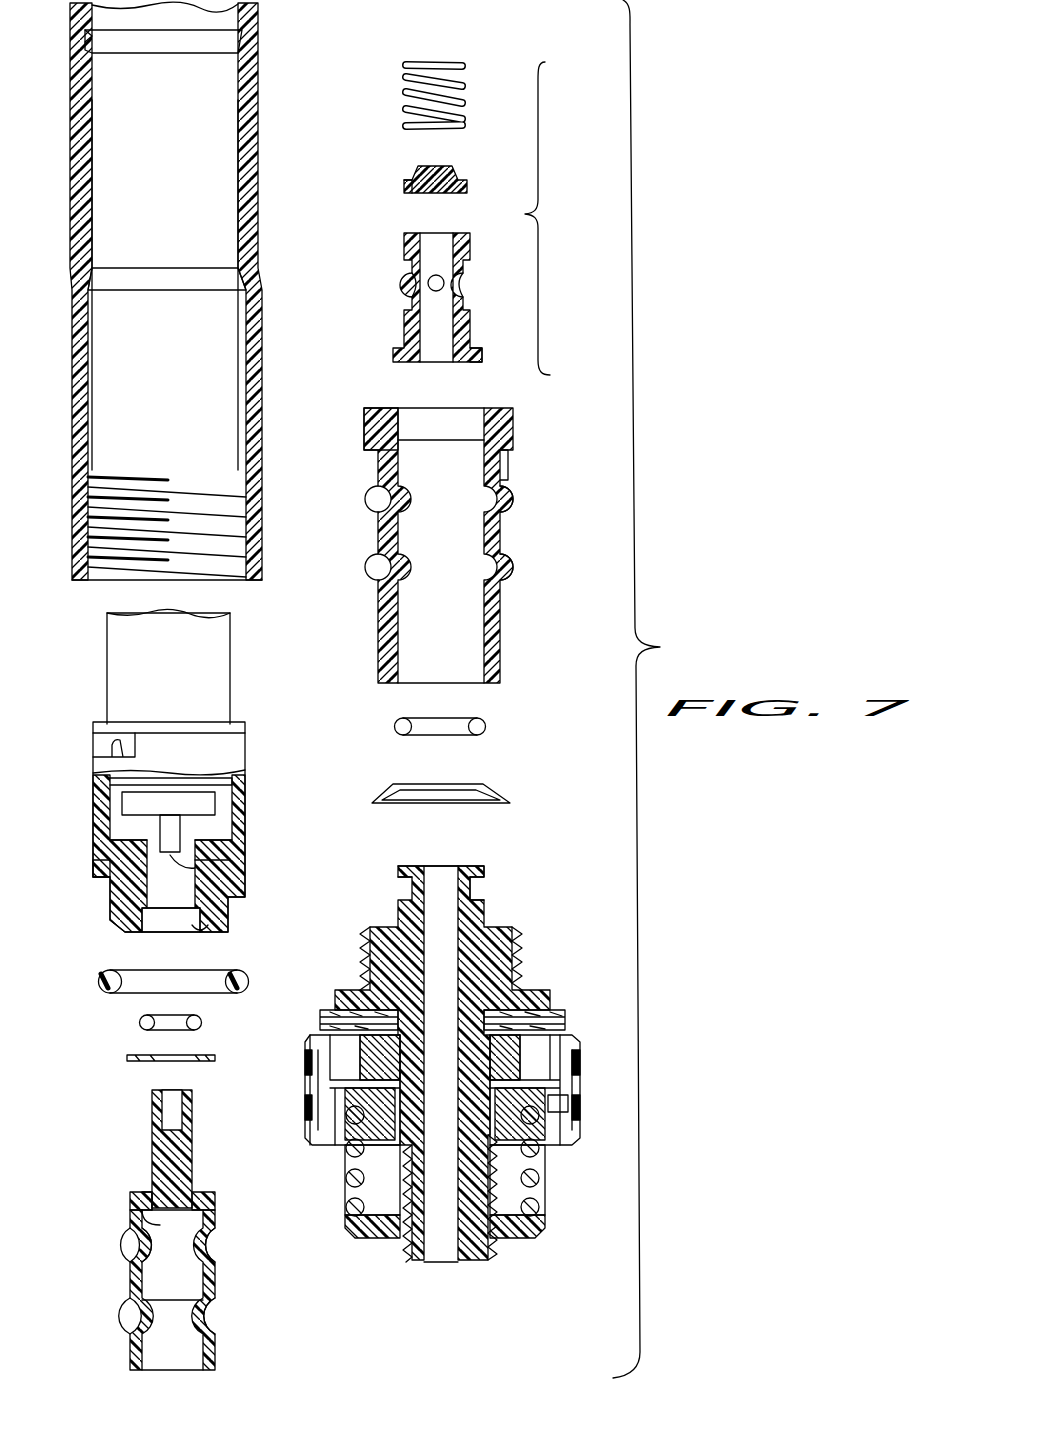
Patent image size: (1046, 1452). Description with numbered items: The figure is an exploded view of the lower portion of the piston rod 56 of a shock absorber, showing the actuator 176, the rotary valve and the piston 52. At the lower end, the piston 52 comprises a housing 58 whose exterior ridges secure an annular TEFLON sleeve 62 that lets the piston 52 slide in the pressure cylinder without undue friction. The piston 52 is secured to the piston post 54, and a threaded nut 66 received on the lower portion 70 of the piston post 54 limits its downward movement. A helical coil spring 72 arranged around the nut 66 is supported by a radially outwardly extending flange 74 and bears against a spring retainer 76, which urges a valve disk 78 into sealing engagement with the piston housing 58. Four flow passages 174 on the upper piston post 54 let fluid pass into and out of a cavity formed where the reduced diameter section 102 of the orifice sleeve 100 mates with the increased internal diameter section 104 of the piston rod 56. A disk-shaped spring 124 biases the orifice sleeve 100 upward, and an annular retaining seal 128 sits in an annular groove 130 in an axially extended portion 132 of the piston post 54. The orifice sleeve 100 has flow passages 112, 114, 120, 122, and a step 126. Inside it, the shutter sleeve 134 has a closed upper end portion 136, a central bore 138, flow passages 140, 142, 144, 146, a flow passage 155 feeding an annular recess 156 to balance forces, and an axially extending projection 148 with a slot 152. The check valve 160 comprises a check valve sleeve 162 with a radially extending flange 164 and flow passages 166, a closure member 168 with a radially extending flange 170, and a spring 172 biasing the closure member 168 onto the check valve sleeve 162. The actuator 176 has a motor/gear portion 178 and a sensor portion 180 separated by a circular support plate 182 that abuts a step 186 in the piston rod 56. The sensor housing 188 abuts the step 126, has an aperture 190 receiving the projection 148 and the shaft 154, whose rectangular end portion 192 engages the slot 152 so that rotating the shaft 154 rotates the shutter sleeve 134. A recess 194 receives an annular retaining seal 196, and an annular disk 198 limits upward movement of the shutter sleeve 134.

The reciprocal piston 52 is at (572, 1048).
The piston post 54 is at (520, 950).
The piston rod 56 is at (76, 170).
The piston housing 58 is at (575, 1140).
The TEFLON sleeve 62 is at (578, 1100).
The threaded nut 66 is at (506, 1222).
The lower portion of the piston post 70 is at (420, 1250).
The helical coil spring 72 is at (542, 1202).
The radially outwardly extending flange 74 is at (530, 1232).
The spring retainer 76 is at (556, 1108).
The valve disk 78 is at (345, 1095).
The orifice sleeve 100 is at (510, 466).
The reduced diameter section 102 is at (502, 528).
The increased internal diameter section 104 is at (72, 332).
The flow passage 112 is at (376, 570).
The flow passage 114 is at (508, 568).
The flow passage 120 is at (372, 500).
The flow passage 122 is at (508, 500).
The disk-shaped spring 124 is at (512, 796).
The step 126 is at (393, 440).
The annular retaining seal 128 is at (487, 724).
The annular groove 130 is at (484, 890).
The axially extended portion 132 is at (490, 870).
The shutter sleeve 134 is at (215, 1215).
The closed upper end portion 136 is at (142, 1245).
The central bore 138 is at (172, 1280).
The flow passage 140 is at (212, 1325).
The flow passage 142 is at (135, 1318).
The flow passage 144 is at (132, 1250).
The flow passage 146 is at (213, 1245).
The axially extending projection 148 is at (158, 1143).
The slot 152 is at (178, 1106).
The shaft 154 is at (172, 832).
The flow passage 155 is at (136, 1212).
The annular recess 156 is at (146, 1192).
The check valve 160 is at (571, 218).
The check valve sleeve 162 is at (472, 318).
The radially extending flange 164 is at (484, 358).
The flow passages 166 is at (412, 288).
The closure member 168 is at (458, 172).
The radially extending flange 170 is at (404, 187).
The spring 172 is at (466, 88).
The flow passages 174 is at (524, 975).
The actuator 176 is at (120, 688).
The motor/gear portion 178 is at (115, 637).
The sensor portion 180 is at (220, 805).
The circular support plate 182 is at (244, 730).
The step 186 is at (90, 38).
The sensor housing 188 is at (118, 856).
The aperture 190 is at (148, 925).
The rectangular end portion 192 is at (205, 872).
The recess 194 is at (200, 932).
The annular retaining seal 196 is at (140, 1030).
The annular disk 198 is at (138, 1063).